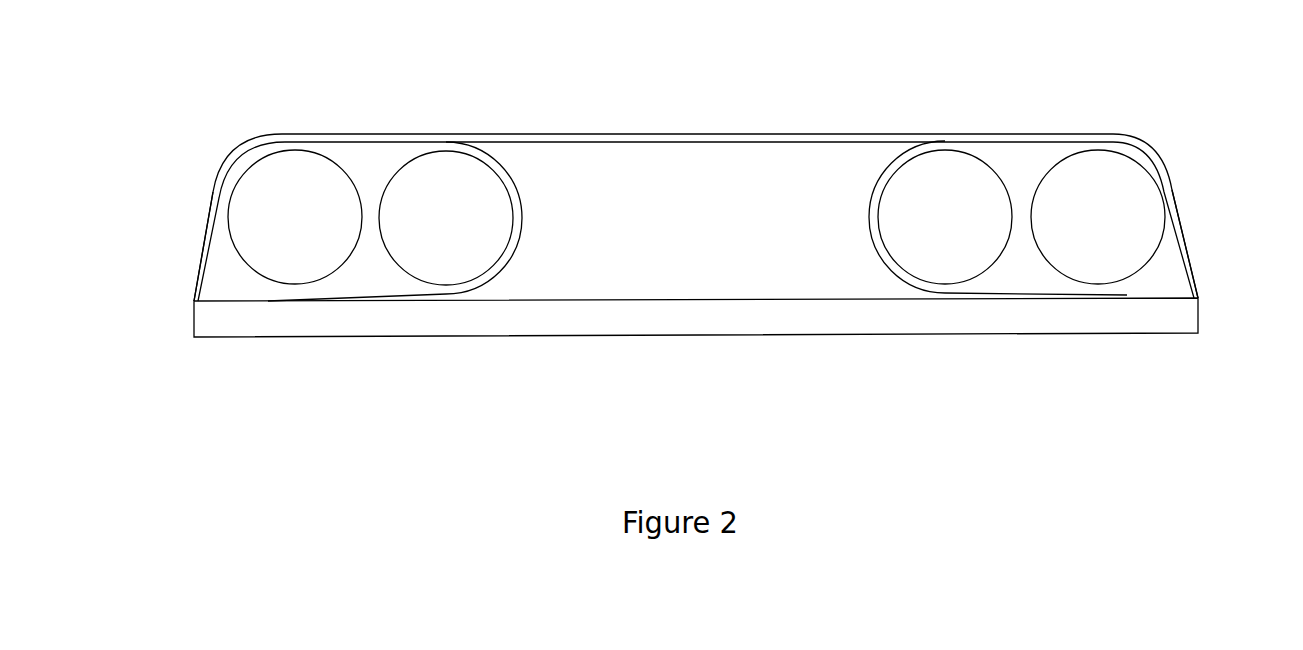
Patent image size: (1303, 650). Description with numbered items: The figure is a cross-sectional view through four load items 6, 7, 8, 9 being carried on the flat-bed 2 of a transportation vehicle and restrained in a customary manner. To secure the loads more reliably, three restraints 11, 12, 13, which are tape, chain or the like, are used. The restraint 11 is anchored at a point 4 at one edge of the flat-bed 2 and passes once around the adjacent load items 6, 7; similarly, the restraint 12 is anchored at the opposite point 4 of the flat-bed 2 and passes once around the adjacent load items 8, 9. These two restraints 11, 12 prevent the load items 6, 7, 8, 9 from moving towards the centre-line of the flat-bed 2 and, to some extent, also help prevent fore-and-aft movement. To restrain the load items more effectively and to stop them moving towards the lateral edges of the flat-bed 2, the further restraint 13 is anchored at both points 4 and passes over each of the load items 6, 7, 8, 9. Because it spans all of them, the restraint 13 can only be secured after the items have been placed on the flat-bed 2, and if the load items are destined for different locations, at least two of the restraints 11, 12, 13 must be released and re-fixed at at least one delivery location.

The flat-bed 2 is at (440, 338).
The anchor point 4 is at (187, 300).
The load item 6 is at (328, 155).
The load item 7 is at (405, 155).
The load item 8 is at (983, 153).
The load item 9 is at (1058, 155).
The restraint 11 is at (485, 155).
The restraint 12 is at (902, 148).
The restraint 13 is at (697, 130).